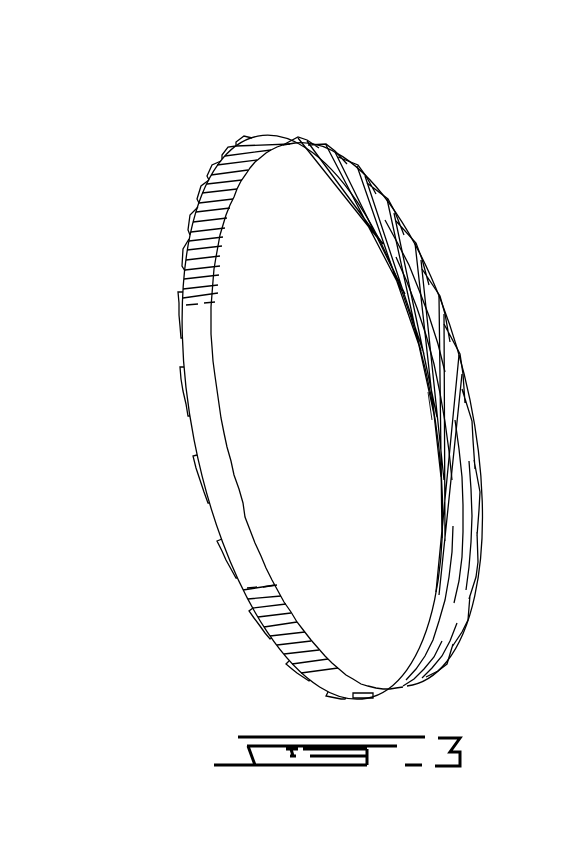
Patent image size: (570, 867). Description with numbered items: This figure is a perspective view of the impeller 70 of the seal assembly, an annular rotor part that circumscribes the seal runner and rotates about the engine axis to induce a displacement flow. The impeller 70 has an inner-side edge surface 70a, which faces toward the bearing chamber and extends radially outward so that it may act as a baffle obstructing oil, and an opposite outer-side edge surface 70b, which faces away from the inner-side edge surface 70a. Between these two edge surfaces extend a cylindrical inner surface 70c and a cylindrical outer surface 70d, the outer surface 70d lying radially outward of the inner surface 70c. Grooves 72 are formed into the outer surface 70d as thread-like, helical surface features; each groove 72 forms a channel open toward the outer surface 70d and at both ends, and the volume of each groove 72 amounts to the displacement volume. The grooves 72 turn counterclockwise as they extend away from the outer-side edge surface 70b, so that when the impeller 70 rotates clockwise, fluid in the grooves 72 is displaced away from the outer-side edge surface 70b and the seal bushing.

The impeller 70 is at (168, 160).
The inner-side edge surface 70a is at (196, 229).
The outer-side edge surface 70b is at (477, 505).
The inner surface 70c is at (207, 432).
The outer surface 70d is at (421, 297).
The grooves 72 is at (430, 392).